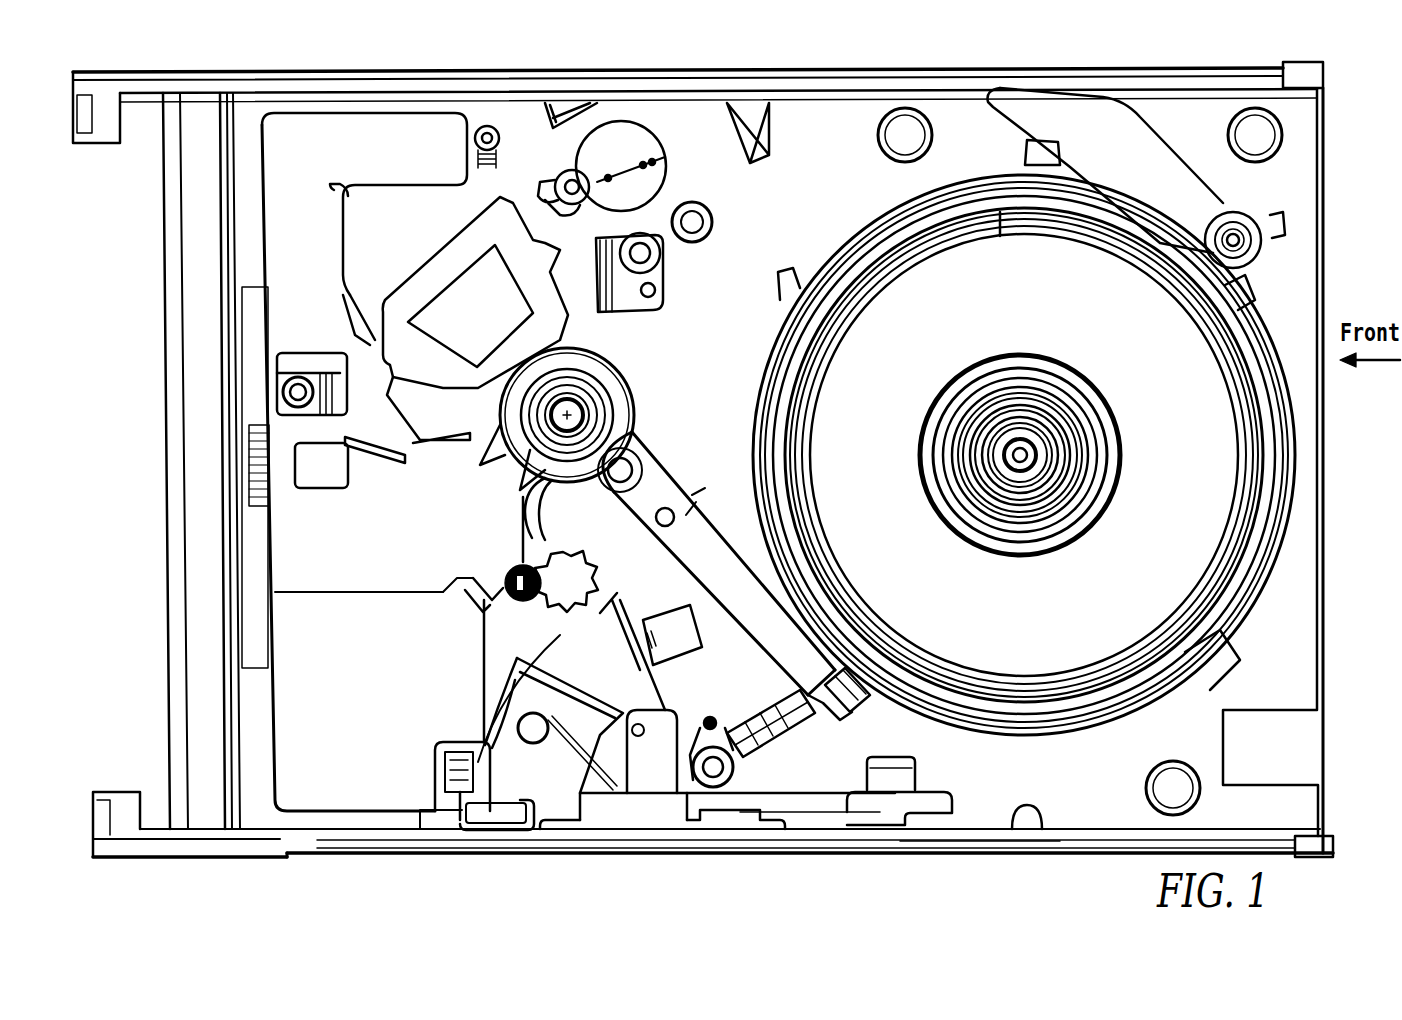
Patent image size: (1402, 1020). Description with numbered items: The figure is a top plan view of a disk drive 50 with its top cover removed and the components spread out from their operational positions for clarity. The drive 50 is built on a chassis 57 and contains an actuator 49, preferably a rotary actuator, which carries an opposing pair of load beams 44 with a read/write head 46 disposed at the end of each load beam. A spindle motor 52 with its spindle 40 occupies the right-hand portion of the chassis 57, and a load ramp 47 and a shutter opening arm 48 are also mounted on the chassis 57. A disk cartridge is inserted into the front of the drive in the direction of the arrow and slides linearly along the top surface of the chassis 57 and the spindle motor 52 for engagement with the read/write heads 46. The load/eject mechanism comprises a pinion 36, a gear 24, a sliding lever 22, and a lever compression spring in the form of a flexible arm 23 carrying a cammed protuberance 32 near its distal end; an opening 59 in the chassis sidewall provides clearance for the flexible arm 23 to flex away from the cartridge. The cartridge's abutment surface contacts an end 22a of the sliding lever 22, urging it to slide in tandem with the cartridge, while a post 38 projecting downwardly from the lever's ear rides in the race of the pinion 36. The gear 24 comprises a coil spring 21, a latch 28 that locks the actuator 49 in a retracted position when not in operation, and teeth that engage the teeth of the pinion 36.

The coil spring 21 is at (500, 585).
The sliding lever 22 is at (720, 826).
The end of sliding lever 22a is at (960, 800).
The lever compression spring / flexible arm 23 is at (482, 745).
The gear 24 is at (560, 565).
The latch 28 is at (528, 522).
The protuberance 32 is at (1030, 815).
The pinion 36 is at (545, 742).
The post 38 is at (671, 744).
The spindle 40 is at (1115, 415).
The load beams 44 is at (690, 512).
The read/write head 46 is at (845, 705).
The load ramp 47 is at (760, 715).
The shutter opening arm 48 is at (1106, 149).
The actuator 49 is at (625, 390).
The disk drive 50 is at (236, 907).
The spindle motor 52 is at (934, 307).
The chassis 57 is at (698, 135).
The opening 59 is at (1022, 852).